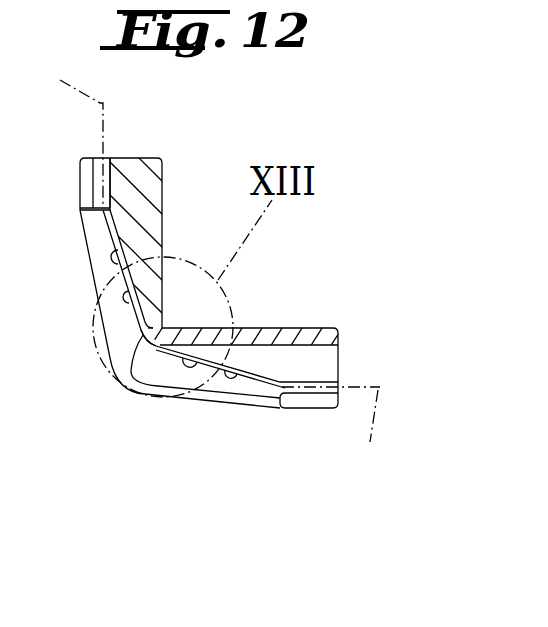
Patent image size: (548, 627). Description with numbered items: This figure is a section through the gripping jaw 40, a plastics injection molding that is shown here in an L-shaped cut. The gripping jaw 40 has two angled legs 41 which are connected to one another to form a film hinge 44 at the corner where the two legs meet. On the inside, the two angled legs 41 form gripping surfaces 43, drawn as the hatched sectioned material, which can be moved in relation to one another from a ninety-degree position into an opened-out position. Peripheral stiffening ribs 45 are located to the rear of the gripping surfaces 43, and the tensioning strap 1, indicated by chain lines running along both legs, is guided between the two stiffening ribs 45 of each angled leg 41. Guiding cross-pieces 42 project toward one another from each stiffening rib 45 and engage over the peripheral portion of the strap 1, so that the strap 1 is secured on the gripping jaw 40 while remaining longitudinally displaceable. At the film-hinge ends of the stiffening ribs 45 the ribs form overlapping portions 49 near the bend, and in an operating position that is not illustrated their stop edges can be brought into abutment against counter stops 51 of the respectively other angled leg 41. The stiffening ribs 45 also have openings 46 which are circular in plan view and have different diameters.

The tensioning strap 1 is at (211, 268).
The gripping jaw 40 is at (197, 159).
The angled legs 41 is at (143, 168).
The guiding cross-pieces 42 is at (87, 177).
The gripping surfaces 43 is at (163, 198).
The film hinge 44 is at (155, 347).
The stiffening ribs 45 is at (112, 322).
The openings 46 is at (229, 376).
The overlapping portions 49 is at (137, 367).
The counter stops 51 is at (125, 283).